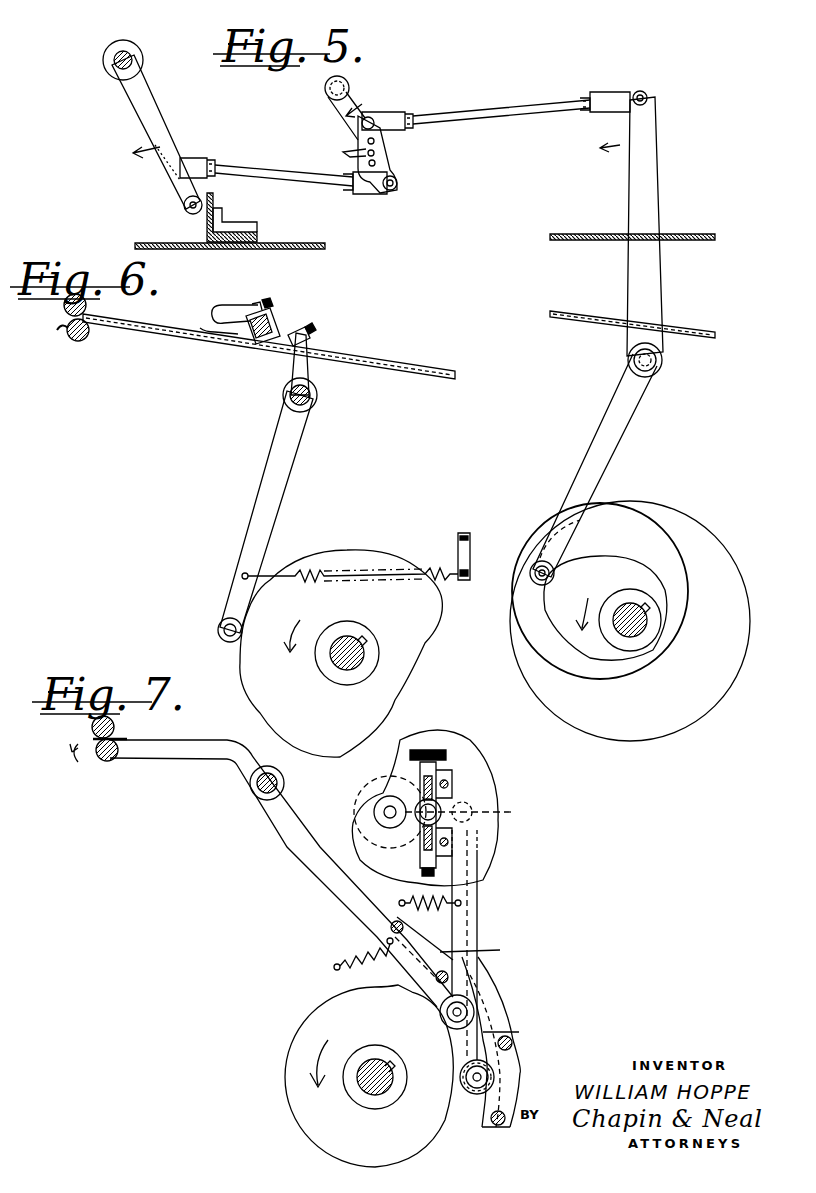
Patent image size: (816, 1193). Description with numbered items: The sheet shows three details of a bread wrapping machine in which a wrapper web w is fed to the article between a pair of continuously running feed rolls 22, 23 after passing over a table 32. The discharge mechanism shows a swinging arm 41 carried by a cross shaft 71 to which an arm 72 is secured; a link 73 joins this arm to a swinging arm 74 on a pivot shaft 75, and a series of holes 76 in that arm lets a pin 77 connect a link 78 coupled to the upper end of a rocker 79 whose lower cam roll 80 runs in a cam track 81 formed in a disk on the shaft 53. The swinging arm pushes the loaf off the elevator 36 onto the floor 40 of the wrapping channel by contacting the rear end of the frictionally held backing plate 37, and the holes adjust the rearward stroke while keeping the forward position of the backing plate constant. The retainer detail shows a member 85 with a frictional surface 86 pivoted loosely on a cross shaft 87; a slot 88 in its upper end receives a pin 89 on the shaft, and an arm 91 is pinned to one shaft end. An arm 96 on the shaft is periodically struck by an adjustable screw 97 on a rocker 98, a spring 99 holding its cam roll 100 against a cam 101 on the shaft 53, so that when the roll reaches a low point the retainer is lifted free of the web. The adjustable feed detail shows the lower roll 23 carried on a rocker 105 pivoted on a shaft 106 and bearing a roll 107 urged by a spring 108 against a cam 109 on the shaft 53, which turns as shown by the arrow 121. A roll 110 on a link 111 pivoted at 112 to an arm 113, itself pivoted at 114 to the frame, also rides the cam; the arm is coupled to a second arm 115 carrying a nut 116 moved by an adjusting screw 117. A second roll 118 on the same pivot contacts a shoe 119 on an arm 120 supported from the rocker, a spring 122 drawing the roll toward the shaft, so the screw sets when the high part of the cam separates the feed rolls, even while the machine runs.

In FIG. 5, the cross shaft 71 is at (130, 55).
In FIG. 5, the arm 72 is at (160, 155).
In FIG. 5, the swinging arm 41 is at (185, 195).
In FIG. 5, the link 73 is at (262, 172).
In FIG. 5, the swinging arm 74 is at (390, 162).
In FIG. 5, the pivot shaft 75 is at (343, 95).
In FIG. 5, the holes 76 is at (343, 152).
In FIG. 5, the pin 77 is at (373, 120).
In FIG. 5, the link 78 is at (483, 108).
In FIG. 5, the rocker 79 is at (648, 205).
In FIG. 5, the table 32 is at (690, 326).
In FIG. 5, the floor 40 is at (583, 233).
In FIG. 5, the web w is at (583, 312).
In FIG. 6, the web w is at (55, 332).
In FIG. 7, the web w is at (120, 737).
In FIG. 5, the cam roll 80 is at (530, 578).
In FIG. 5, the cam track 81 is at (618, 542).
In FIG. 5, the shaft 53 is at (630, 640).
In FIG. 6, the shaft 53 is at (345, 636).
In FIG. 7, the shaft 53 is at (370, 1088).
In FIG. 5, the backing plate 37 is at (237, 226).
In FIG. 5, the elevator 36 is at (325, 228).
In FIG. 6, the frictional surface 86 is at (245, 338).
In FIG. 6, the upper feed roll 22 is at (64, 306).
In FIG. 7, the upper feed roll 22 is at (92, 722).
In FIG. 6, the lower feed roll 23 is at (82, 342).
In FIG. 7, the lower feed roll 23 is at (101, 760).
In FIG. 6, the arm 91 is at (220, 304).
In FIG. 6, the member 85 is at (200, 328).
In FIG. 6, the cross shaft 87 is at (276, 312).
In FIG. 6, the slot 88 is at (268, 300).
In FIG. 6, the pin 89 is at (258, 302).
In FIG. 6, the adjustable screw 97 is at (300, 324).
In FIG. 6, the arm 96 is at (280, 345).
In FIG. 6, the rocker 98 is at (287, 470).
In FIG. 6, the cam roll 100 is at (218, 624).
In FIG. 6, the spring 99 is at (440, 572).
In FIG. 6, the cam 101 is at (418, 624).
In FIG. 7, the rocker 105 is at (214, 762).
In FIG. 7, the shaft 106 is at (258, 795).
In FIG. 7, the spring 108 is at (355, 950).
In FIG. 7, the roll 107 is at (470, 1005).
In FIG. 7, the link 111 is at (462, 938).
In FIG. 7, the arm 120 is at (484, 954).
In FIG. 7, the spring 122 is at (470, 896).
In FIG. 7, the second roll 118 is at (462, 1098).
In FIG. 7, the shoe 119 is at (505, 1040).
In FIG. 7, the roll 110 is at (485, 1060).
In FIG. 7, the cam 109 is at (302, 1105).
In FIG. 7, the arrow 121 is at (322, 1055).
In FIG. 7, the arm 113 is at (375, 782).
In FIG. 7, the pivot 114 is at (390, 812).
In FIG. 7, the nut 116 is at (440, 805).
In FIG. 7, the adjusting screw 117 is at (432, 750).
In FIG. 7, the pivot 112 is at (479, 812).
In FIG. 7, the second arm 115 is at (425, 820).